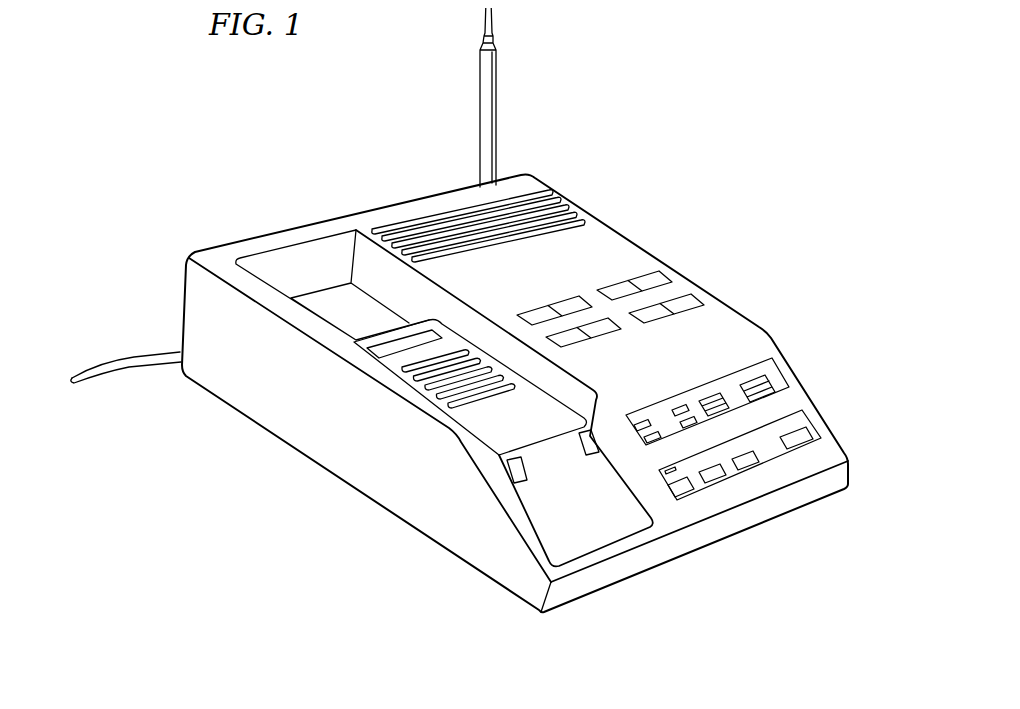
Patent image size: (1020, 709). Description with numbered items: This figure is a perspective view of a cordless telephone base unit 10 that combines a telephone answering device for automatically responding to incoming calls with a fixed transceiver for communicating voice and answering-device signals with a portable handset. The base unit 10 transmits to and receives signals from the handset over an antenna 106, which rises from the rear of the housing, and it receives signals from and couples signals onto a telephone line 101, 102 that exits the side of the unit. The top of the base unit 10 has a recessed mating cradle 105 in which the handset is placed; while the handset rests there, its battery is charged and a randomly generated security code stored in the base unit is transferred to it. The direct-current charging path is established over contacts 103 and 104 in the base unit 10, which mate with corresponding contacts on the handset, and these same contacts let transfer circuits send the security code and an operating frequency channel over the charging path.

The base unit 10 is at (623, 203).
The telephone line 101 is at (128, 355).
The telephone line 102 is at (126, 372).
The contact 103 is at (510, 470).
The contact 104 is at (597, 433).
The cradle 105 is at (303, 250).
The antenna 106 is at (498, 103).